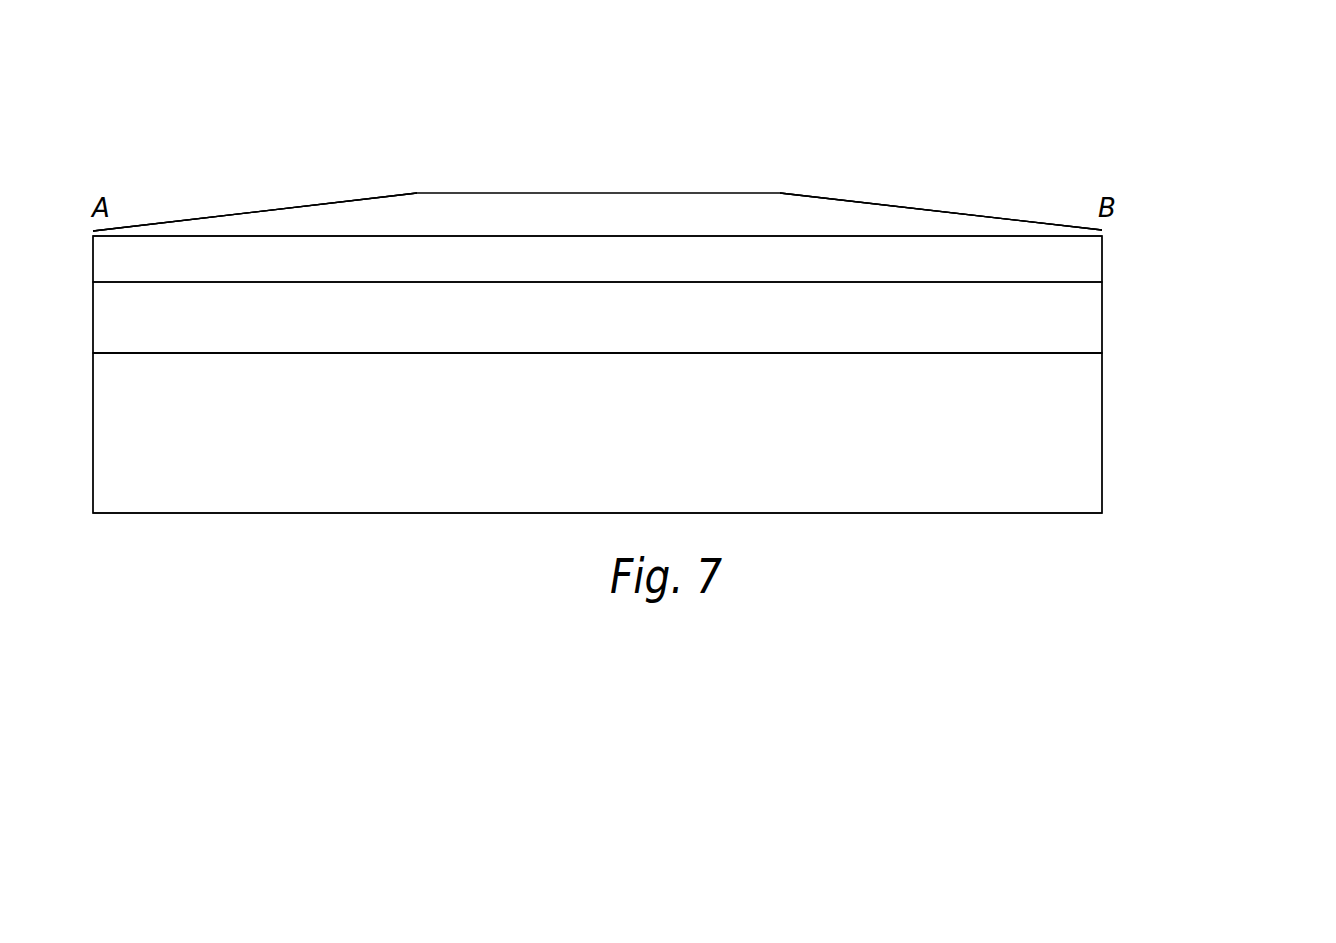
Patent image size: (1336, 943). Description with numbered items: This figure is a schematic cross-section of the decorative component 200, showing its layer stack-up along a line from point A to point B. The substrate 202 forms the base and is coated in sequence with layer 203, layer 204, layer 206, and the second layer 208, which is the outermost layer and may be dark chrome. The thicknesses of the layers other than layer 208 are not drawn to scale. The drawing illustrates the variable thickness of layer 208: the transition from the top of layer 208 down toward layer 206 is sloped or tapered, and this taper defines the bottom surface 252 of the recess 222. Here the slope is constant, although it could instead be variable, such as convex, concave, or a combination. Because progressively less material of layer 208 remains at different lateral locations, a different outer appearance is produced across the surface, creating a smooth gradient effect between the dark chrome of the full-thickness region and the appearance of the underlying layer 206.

The component 200 is at (834, 110).
The substrate 202 is at (1102, 425).
The layer 203 is at (1102, 318).
The layer 204 is at (1102, 303).
The layer 206 is at (1102, 262).
The second layer 208 is at (915, 222).
The recess 222 is at (179, 203).
The bottom surface 252 is at (320, 205).